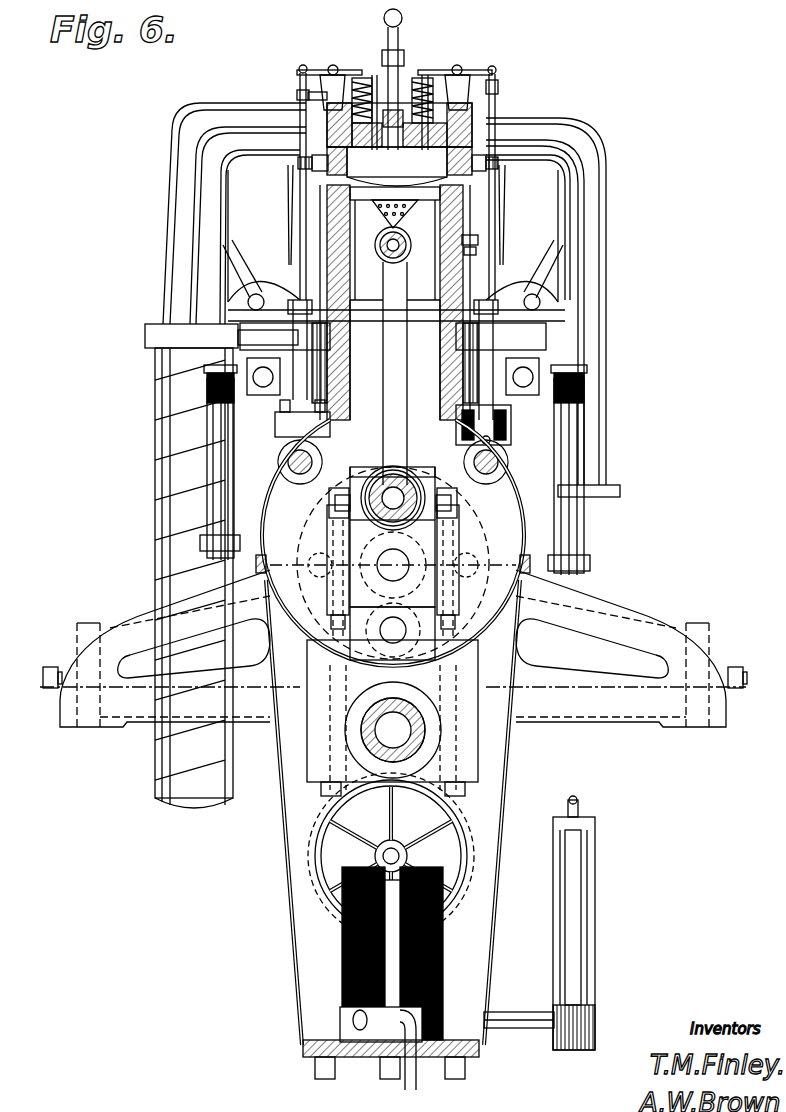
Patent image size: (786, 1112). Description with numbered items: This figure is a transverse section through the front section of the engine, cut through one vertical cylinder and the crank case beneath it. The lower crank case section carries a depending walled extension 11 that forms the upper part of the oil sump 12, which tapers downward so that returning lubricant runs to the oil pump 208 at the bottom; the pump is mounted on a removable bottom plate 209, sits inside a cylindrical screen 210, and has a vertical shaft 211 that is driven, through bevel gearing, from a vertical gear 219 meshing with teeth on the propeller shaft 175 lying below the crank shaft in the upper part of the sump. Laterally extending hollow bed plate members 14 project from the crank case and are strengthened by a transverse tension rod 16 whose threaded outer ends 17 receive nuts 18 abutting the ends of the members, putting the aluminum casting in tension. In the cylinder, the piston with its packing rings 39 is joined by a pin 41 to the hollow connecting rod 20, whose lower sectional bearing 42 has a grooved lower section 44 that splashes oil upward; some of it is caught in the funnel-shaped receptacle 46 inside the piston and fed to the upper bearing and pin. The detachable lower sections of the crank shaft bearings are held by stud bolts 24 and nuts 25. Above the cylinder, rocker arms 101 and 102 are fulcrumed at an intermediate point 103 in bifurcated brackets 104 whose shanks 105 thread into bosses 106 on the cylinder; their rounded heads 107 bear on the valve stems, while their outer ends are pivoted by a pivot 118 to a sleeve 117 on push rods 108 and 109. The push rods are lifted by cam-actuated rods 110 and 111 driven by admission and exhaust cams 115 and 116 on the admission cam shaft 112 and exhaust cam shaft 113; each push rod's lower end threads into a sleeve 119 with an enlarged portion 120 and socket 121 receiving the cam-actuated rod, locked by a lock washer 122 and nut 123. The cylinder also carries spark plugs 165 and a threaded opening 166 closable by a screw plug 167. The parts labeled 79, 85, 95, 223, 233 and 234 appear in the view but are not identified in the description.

The depending walled extension 11 is at (274, 665).
The oil sump 12 is at (292, 952).
The bed plate members 14 is at (616, 648).
The transverse tension rods 16 is at (235, 680).
The threaded outer ends 17 is at (48, 668).
The nuts 18 is at (408, 373).
The connecting rods 20 is at (385, 396).
The stud bolts 24 is at (440, 490).
The nuts 25 is at (348, 490).
The packing rings 39 is at (397, 162).
The pins 41 is at (382, 245).
The sectional bearings 42 is at (438, 510).
The lower section of the bearing 44 is at (350, 510).
The funnel-shaped receptacle 46 is at (395, 209).
The right pipe 79 is at (537, 134).
The left pipe 85 is at (172, 243).
The flange 95 is at (145, 327).
The rocker arms 101 is at (470, 70).
The rocker arms 102 is at (300, 66).
The intermediate fulcrum point 103 is at (457, 66).
The bifurcated brackets 104 is at (452, 66).
The shanks 105 is at (308, 94).
The bosses 106 is at (327, 112).
The rounded heads 107 is at (364, 63).
The push rods 108 is at (490, 203).
The push rods 109 is at (300, 203).
The cam-actuated rods 110 is at (480, 372).
The cam-actuated rods 111 is at (305, 358).
The admission cam shaft 112 is at (498, 468).
The exhaust cam shaft 113 is at (300, 455).
The admission cams 115 is at (288, 470).
The exhaust cams 116 is at (500, 470).
The sleeve 117 is at (498, 86).
The pivot 118 is at (496, 70).
The sleeve 119 is at (296, 342).
The lower enlarged portion 120 is at (470, 338).
The socket 121 is at (480, 352).
The lock washer 122 is at (305, 335).
The nut 123 is at (350, 359).
The spark plugs 165 is at (300, 164).
The threaded opening 166 is at (476, 240).
The screw plug 167 is at (478, 249).
The propeller shaft 175 is at (392, 718).
The oil pump 208 is at (355, 1037).
The removable bottom plate 209 is at (470, 1060).
The cylindrical screen 210 is at (342, 945).
The vertical shaft 211 is at (390, 985).
The vertical gear 219 is at (318, 856).
The gauge 223 is at (577, 1035).
The cylinder wall 233 is at (395, 302).
The head plate 234 is at (397, 168).